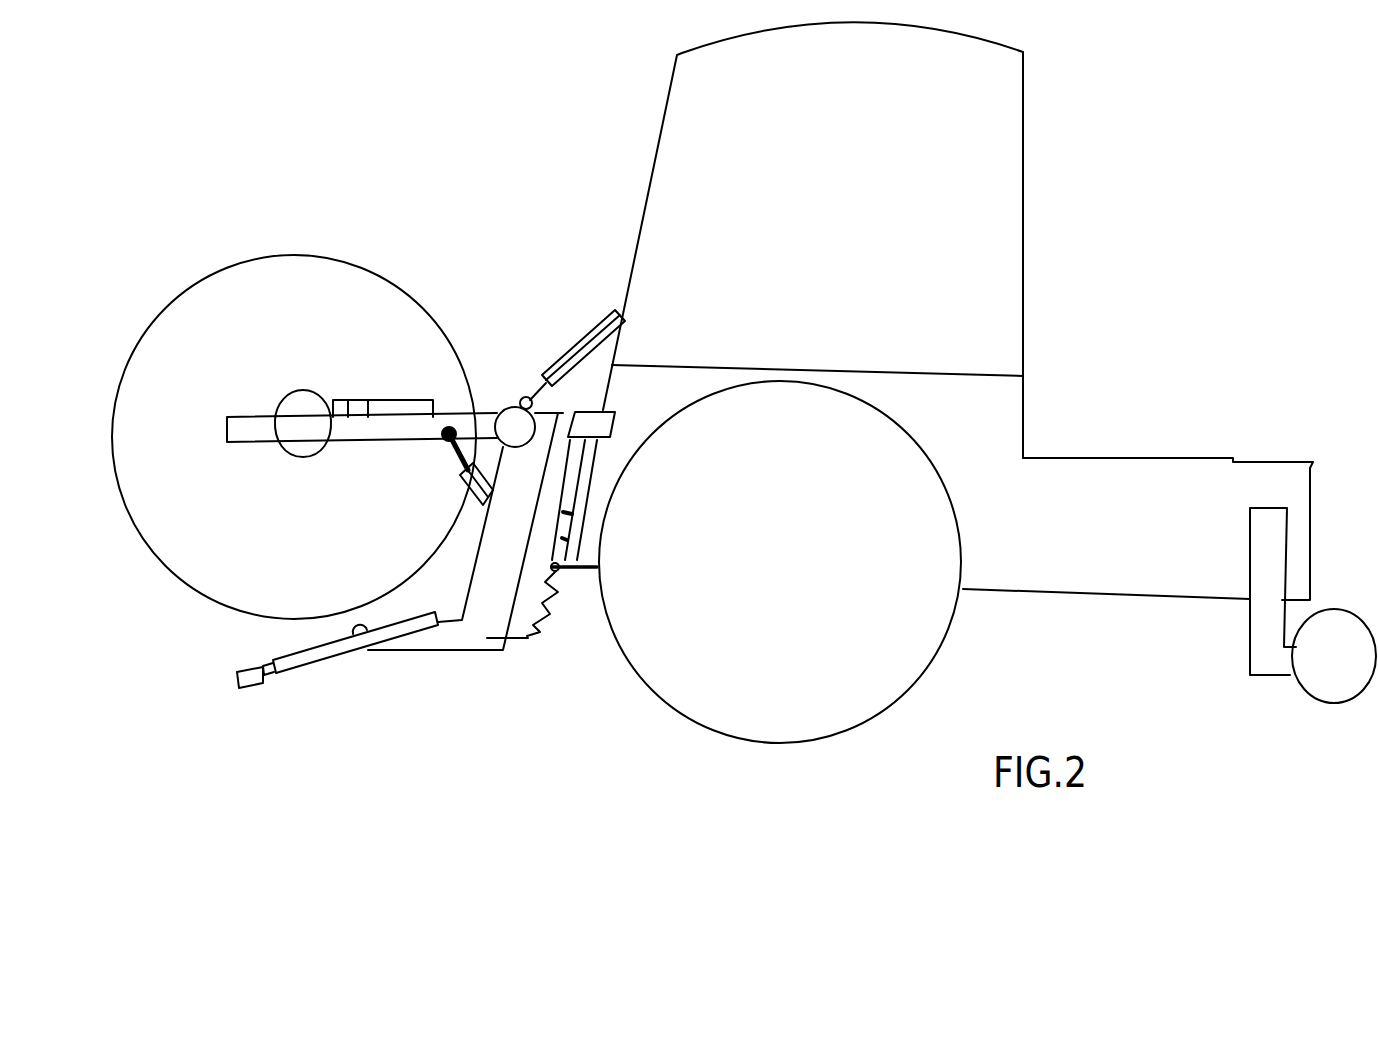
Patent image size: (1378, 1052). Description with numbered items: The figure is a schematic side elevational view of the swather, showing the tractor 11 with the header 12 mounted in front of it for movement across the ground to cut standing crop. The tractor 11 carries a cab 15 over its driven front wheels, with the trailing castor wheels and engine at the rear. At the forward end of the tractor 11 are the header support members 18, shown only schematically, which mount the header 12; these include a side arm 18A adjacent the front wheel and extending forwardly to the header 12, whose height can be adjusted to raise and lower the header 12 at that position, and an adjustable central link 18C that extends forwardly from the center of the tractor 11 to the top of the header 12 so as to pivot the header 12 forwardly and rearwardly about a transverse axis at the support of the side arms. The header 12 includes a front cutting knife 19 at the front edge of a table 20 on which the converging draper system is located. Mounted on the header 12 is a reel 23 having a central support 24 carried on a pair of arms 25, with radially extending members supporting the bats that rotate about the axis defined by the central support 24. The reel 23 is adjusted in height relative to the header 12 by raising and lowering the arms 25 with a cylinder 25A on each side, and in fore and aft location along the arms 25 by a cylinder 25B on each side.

The tractor 11 is at (987, 382).
The cab 15 is at (1003, 152).
The header 12 is at (463, 323).
The reel 23 is at (237, 292).
The central support 24 is at (282, 403).
The arms 25 is at (393, 428).
The cylinder 25A is at (478, 503).
The cylinder 25B is at (383, 400).
The header support members 18 is at (573, 468).
The side arm 18A is at (566, 572).
The adjustable central link 18C is at (590, 337).
The table 20 is at (368, 628).
The front cutting knife 19 is at (252, 688).